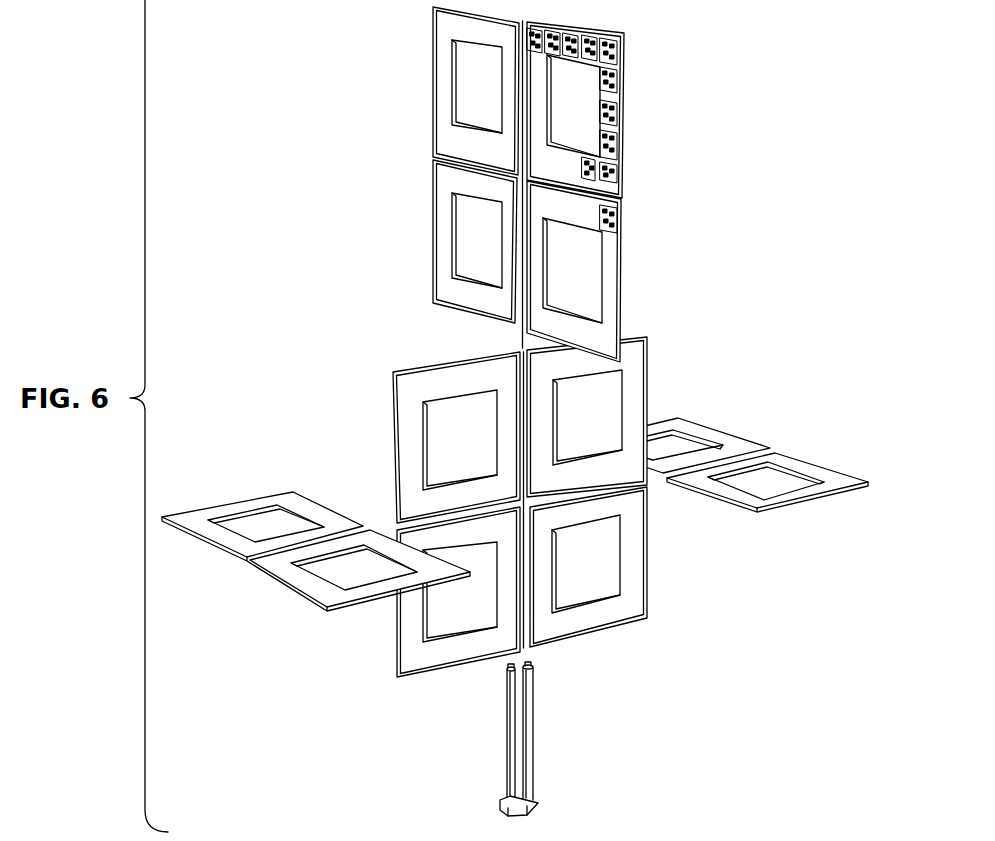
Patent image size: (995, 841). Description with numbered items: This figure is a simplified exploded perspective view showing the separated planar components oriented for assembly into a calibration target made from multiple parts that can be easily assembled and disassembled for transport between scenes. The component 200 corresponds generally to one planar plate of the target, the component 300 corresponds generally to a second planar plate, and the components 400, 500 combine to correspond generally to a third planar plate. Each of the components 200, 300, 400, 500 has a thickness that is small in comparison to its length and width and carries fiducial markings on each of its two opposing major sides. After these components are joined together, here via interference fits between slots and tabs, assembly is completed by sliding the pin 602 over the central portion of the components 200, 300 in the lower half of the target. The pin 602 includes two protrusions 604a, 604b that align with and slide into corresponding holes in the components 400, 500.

The component 200 is at (434, 80).
The component 300 is at (648, 358).
The component 400 is at (287, 498).
The component 500 is at (793, 457).
The pin 602 is at (538, 718).
The protrusion 604a is at (507, 670).
The protrusion 604b is at (530, 666).